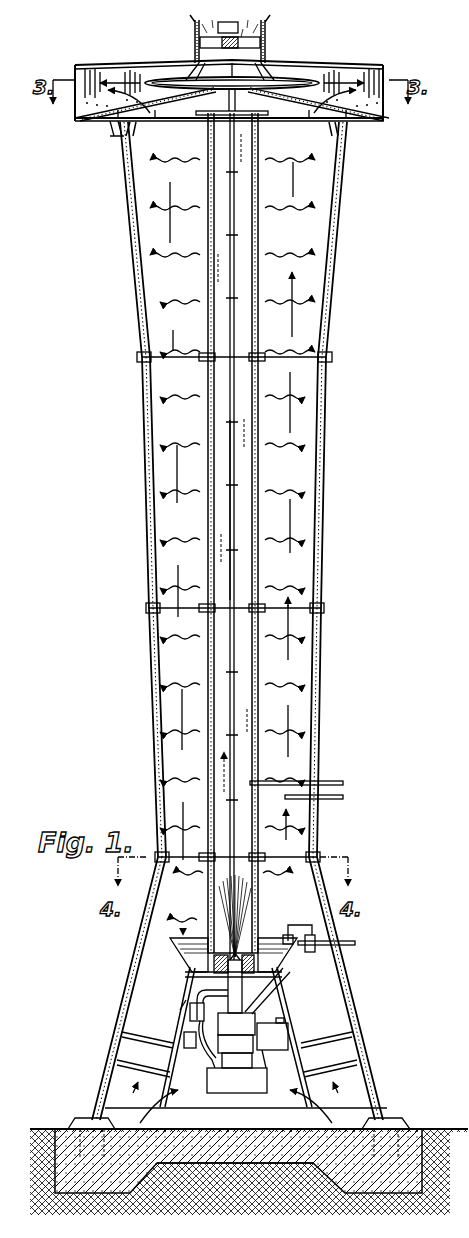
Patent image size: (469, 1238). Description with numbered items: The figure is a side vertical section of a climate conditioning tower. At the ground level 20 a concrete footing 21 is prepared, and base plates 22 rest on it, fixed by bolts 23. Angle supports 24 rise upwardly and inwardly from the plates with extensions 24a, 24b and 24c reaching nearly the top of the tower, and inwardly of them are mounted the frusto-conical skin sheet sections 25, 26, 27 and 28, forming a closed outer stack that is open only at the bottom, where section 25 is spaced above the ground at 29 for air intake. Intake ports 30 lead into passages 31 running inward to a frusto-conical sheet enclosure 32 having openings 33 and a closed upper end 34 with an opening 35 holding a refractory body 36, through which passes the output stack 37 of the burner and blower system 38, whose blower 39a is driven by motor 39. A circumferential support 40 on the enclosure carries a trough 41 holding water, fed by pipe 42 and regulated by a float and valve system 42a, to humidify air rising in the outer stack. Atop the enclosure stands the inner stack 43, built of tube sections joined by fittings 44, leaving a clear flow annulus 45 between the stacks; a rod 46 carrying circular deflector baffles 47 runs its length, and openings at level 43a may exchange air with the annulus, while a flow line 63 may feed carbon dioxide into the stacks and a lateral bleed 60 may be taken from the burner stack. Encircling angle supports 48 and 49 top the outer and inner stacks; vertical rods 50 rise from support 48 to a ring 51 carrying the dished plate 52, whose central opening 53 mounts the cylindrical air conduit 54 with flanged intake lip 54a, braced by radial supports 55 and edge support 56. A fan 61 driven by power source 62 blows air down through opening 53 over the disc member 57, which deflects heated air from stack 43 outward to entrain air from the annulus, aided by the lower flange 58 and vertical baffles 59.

The ground level 20 is at (444, 1129).
The footing 21 is at (422, 1180).
The base plates 22 is at (84, 1118).
The bolts 23 is at (422, 1157).
The angle supports 24 is at (140, 961).
The angle support extension 24a is at (157, 771).
The angle support extension 24b is at (148, 520).
The angle support extension 24c is at (338, 205).
The frusto-conical skin sheet section 25 is at (305, 893).
The frusto-conical skin sheet section 26 is at (313, 706).
The frusto-conical skin sheet section 27 is at (320, 469).
The upper skin sheet 28 is at (333, 237).
The air intake space 29 is at (201, 1136).
The intake ports 30 is at (350, 1038).
The passages 31 is at (140, 1040).
The frusto-conical sheet enclosure 32 is at (184, 1001).
The openings 33 is at (235, 1098).
The closed upper end 34 is at (286, 968).
The opening 35 is at (214, 989).
The refractory body 36 is at (260, 950).
The output stack 37 is at (236, 1024).
The burner and blower system 38 is at (244, 1093).
The motor 39 is at (280, 1027).
The blower 39a is at (235, 1051).
The circumferential support 40 is at (185, 960).
The circumferential trough 41 is at (200, 940).
The pipe 42 is at (356, 943).
The float and valve system 42a is at (318, 932).
The inner stack 43 is at (255, 468).
The level of openings 43a is at (243, 921).
The fittings 44 is at (258, 593).
The flow annulus 45 is at (312, 413).
The rod 46 is at (236, 205).
The deflector baffles 47 is at (236, 239).
The encircling angle support 48 is at (342, 128).
The encircling angle support 49 is at (206, 150).
The vertical support rods 50 is at (357, 67).
The circumferential angle support ring 51 is at (338, 66).
The dished circular plate 52 is at (155, 66).
The central opening 53 is at (262, 60).
The cylindrical air conduit 54 is at (200, 42).
The air intake lip 54a is at (196, 30).
The angle member structural supports 55 is at (112, 66).
The circumferential angle member edge support 56 is at (385, 66).
The circular disc member 57 is at (197, 112).
The lower air flow guiding flange 58 is at (114, 124).
The vertical baffles 59 is at (80, 108).
The lateral bleed 60 is at (262, 994).
The fan 61 is at (262, 40).
The power source 62 is at (240, 26).
The flow line 63 is at (343, 797).